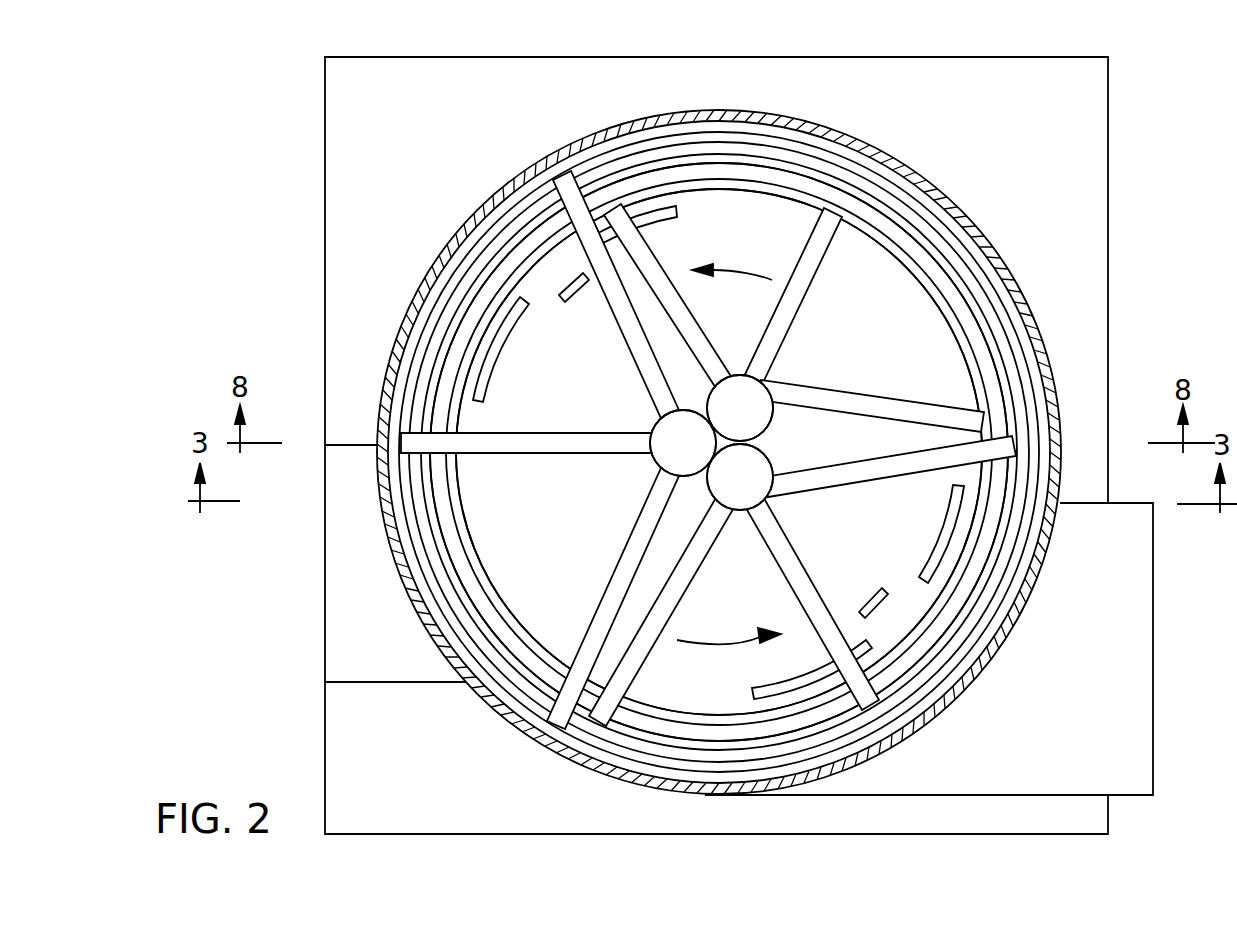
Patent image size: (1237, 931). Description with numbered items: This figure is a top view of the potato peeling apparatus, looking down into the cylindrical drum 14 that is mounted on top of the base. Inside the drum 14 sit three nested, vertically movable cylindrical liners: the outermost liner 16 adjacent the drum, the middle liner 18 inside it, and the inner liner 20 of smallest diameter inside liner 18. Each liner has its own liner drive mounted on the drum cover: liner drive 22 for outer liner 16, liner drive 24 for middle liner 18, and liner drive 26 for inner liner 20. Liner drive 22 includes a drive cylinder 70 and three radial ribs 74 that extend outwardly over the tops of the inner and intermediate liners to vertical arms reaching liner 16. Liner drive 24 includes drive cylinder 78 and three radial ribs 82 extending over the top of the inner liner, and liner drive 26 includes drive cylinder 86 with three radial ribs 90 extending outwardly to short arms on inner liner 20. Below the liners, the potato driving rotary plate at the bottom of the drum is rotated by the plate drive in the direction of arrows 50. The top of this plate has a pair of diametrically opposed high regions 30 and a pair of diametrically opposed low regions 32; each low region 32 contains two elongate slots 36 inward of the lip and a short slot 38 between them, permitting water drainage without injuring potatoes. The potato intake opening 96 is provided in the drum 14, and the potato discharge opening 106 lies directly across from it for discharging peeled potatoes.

The cylindrical drum 14 is at (640, 105).
The outermost liner 16 is at (692, 125).
The middle liner 18 is at (760, 150).
The inner liner 20 is at (792, 182).
The liner drive 22 is at (683, 490).
The liner drive 24 is at (790, 452).
The liner drive 26 is at (705, 384).
The high regions 30 is at (908, 285).
The low regions 32 is at (560, 253).
The elongate slots 36 is at (668, 220).
The short slot 38 is at (570, 300).
The arrows 50 is at (740, 270).
The drive cylinder 70 is at (668, 457).
The radial ribs 74 is at (622, 348).
The drive cylinder 78 is at (725, 491).
The radial ribs 82 is at (827, 483).
The drive cylinder 86 is at (725, 422).
The radial ribs 90 is at (705, 330).
The potato intake opening 96 is at (332, 570).
The potato discharge opening 106 is at (1142, 779).